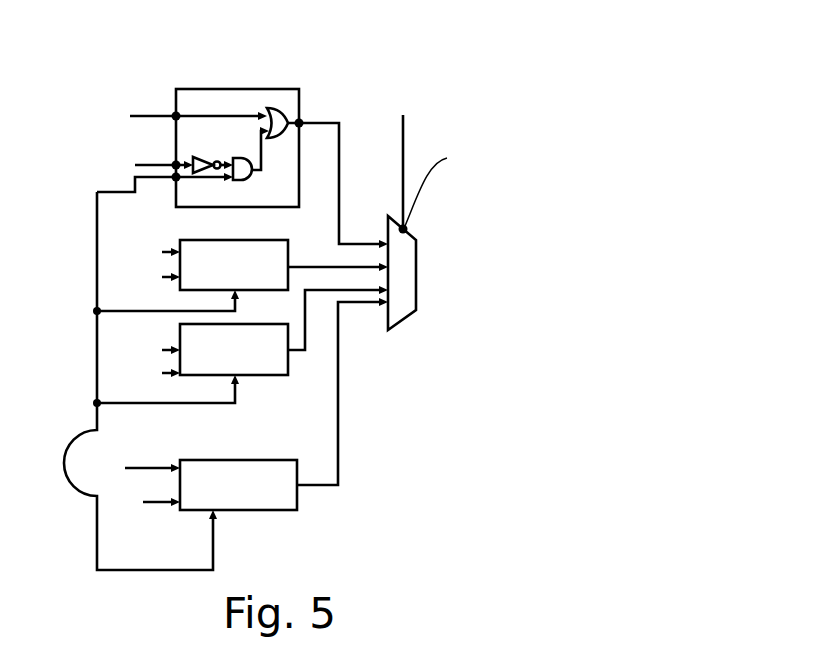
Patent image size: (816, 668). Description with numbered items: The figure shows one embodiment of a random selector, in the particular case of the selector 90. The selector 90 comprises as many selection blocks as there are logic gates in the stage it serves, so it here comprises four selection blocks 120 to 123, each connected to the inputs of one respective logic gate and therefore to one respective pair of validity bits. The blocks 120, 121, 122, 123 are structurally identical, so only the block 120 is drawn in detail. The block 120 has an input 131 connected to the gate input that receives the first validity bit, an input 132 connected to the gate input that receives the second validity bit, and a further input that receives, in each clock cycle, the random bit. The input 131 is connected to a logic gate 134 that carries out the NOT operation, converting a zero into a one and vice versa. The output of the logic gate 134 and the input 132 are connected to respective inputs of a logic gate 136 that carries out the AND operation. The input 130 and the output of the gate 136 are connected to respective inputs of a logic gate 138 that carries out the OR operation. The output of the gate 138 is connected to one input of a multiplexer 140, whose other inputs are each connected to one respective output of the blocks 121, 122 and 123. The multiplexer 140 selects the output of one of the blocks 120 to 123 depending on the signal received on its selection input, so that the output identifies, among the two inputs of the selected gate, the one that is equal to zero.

The selector 90 is at (444, 76).
The selection block 120 is at (308, 95).
The selection block 121 is at (234, 265).
The selection block 122 is at (234, 349).
The selection block 123 is at (238, 485).
The input 130 is at (176, 112).
The input 131 is at (176, 165).
The input 132 is at (176, 179).
The logic gate 134 is at (208, 156).
The logic gate 136 is at (252, 180).
The logic gate 138 is at (278, 106).
The multiplexer 140 is at (409, 312).